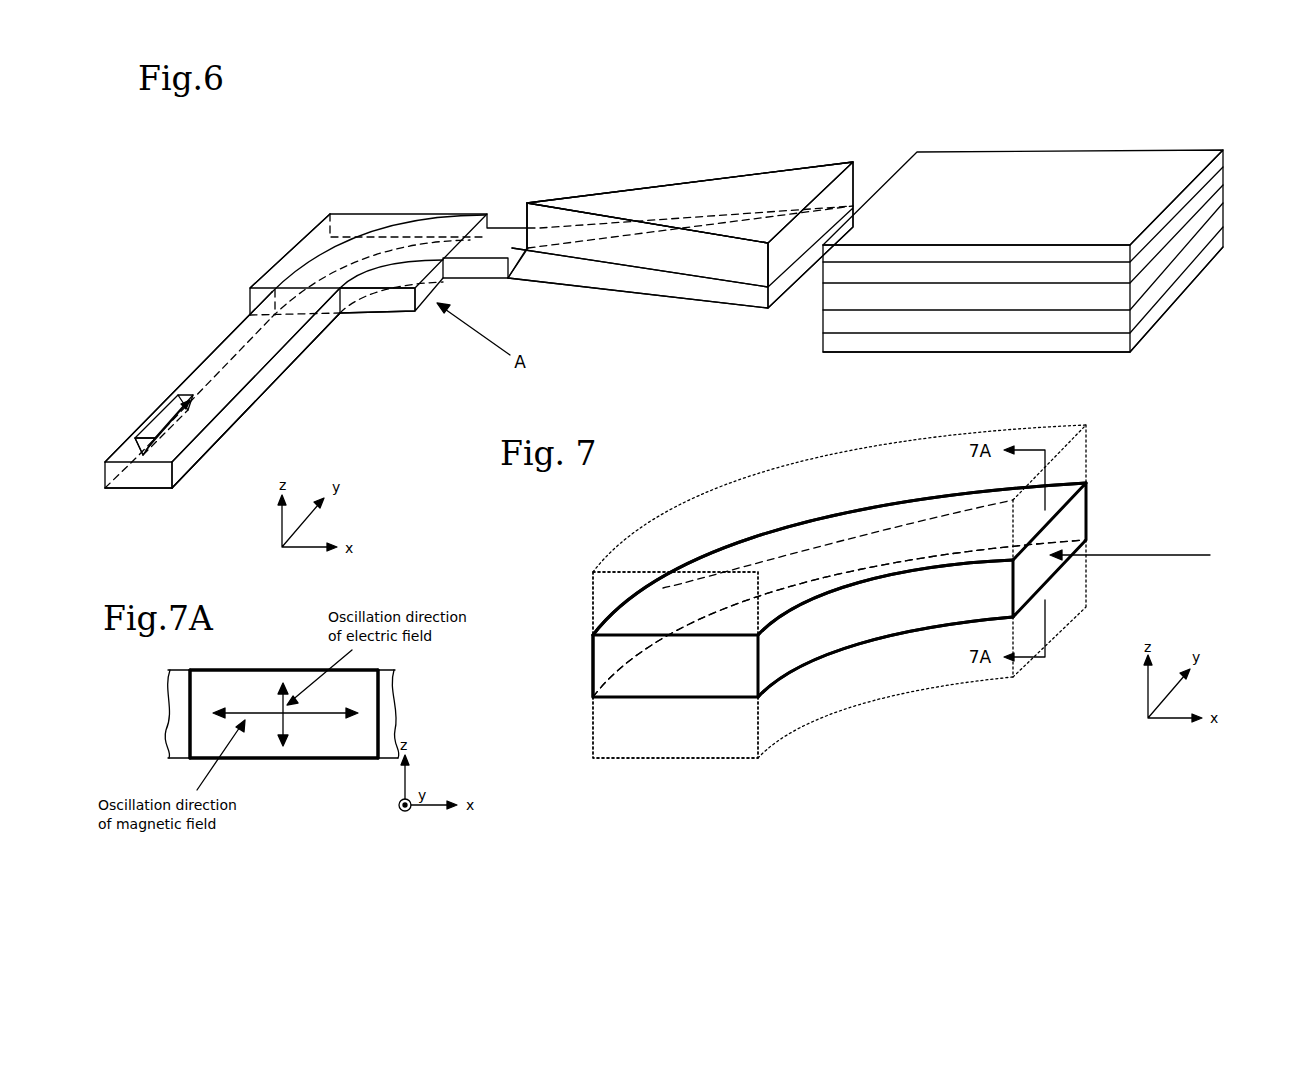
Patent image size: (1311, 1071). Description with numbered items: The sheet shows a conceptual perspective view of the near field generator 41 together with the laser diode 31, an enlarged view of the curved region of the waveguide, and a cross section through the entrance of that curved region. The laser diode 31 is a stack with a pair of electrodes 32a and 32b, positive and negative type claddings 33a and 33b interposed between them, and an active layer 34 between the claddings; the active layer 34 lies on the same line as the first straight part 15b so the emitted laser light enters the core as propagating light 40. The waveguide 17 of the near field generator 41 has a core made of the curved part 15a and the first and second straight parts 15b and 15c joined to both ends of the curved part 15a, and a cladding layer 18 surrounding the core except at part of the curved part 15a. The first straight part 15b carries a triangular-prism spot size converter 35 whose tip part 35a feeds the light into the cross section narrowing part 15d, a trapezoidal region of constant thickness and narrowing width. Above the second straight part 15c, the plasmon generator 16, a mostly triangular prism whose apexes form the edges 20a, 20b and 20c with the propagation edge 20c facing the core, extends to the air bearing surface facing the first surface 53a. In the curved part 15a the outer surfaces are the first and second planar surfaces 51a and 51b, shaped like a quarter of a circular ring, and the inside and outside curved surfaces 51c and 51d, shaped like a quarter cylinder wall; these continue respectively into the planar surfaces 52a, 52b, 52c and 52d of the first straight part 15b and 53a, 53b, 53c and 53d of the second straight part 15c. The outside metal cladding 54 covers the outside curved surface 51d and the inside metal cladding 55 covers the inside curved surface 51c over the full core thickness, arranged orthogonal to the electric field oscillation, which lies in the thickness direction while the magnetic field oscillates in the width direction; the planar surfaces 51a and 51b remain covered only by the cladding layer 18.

In FIG. 6, the curved part 15a is at (412, 237).
In FIG. 7, the curved part 15a is at (797, 484).
In FIG. 6, the first straight part 15b is at (846, 93).
In FIG. 6, the second straight part 15c is at (245, 305).
In FIG. 6, the cross section narrowing part 15d is at (752, 310).
In FIG. 6, the plasmon generator 16 is at (168, 415).
In FIG. 6, the waveguide 17 is at (337, 344).
In FIG. 7, the cladding layer 18 is at (595, 602).
In FIG. 6, the edge 20a is at (133, 433).
In FIG. 6, the edge 20b is at (238, 418).
In FIG. 6, the propagation edge 20c is at (168, 480).
In FIG. 6, the laser diode 31 is at (1061, 216).
In FIG. 6, the electrode 32a is at (1224, 158).
In FIG. 6, the P-type cladding 33a is at (1224, 178).
In FIG. 6, the active layer 34 is at (1224, 198).
In FIG. 6, the N-type cladding 33b is at (1224, 220).
In FIG. 6, the electrode 32b is at (1224, 243).
In FIG. 6, the spot size converter 35 is at (690, 200).
In FIG. 6, the tip part 35a is at (537, 228).
In FIG. 7, the propagating light 40 is at (1100, 565).
In FIG. 6, the near field generator 41 is at (410, 157).
In FIG. 7, the first planar surface 51a is at (707, 567).
In FIG. 7A, the first planar surface 51a is at (291, 667).
In FIG. 7, the second planar surface 51b is at (698, 670).
In FIG. 7A, the second planar surface 51b is at (284, 760).
In FIG. 7, the inside curved surface 51c is at (803, 633).
In FIG. 7A, the inside curved surface 51c is at (188, 693).
In FIG. 7, the outside curved surface 51d is at (660, 587).
In FIG. 7A, the outside curved surface 51d is at (392, 692).
In FIG. 6, the first planar surface 52a is at (537, 250).
In FIG. 6, the second planar surface 52b is at (682, 278).
In FIG. 6, the third planar surface 52c is at (605, 285).
In FIG. 6, the fourth planar surface 52d is at (590, 233).
In FIG. 6, the first planar surface 53a is at (238, 340).
In FIG. 6, the second planar surface 53b is at (222, 445).
In FIG. 6, the third planar surface 53c is at (290, 365).
In FIG. 6, the fourth planar surface 53d is at (198, 378).
In FIG. 6, the outside metal cladding 54 is at (350, 215).
In FIG. 7A, the outside metal cladding 54 is at (400, 715).
In FIG. 6, the inside metal cladding 55 is at (393, 302).
In FIG. 7A, the inside metal cladding 55 is at (170, 731).